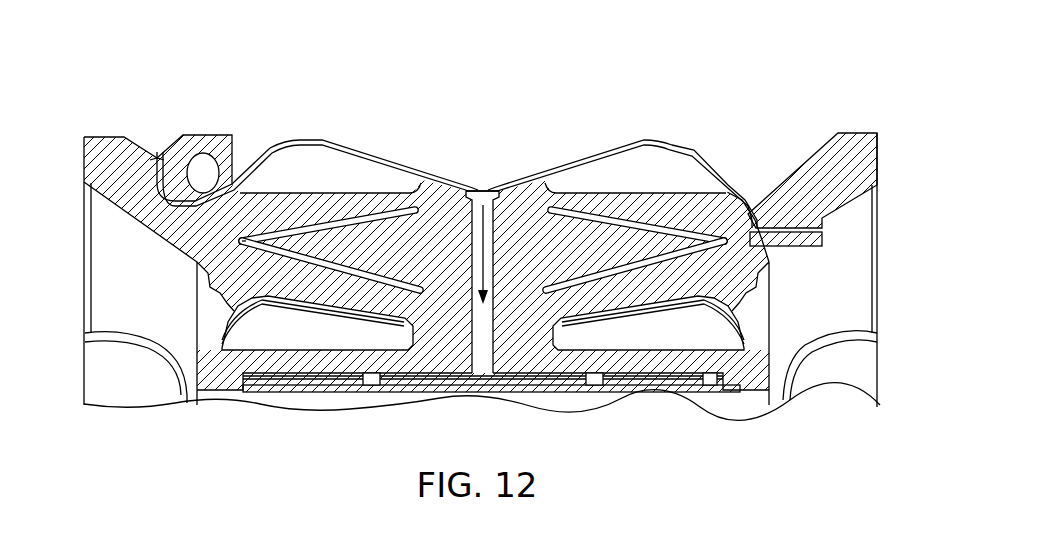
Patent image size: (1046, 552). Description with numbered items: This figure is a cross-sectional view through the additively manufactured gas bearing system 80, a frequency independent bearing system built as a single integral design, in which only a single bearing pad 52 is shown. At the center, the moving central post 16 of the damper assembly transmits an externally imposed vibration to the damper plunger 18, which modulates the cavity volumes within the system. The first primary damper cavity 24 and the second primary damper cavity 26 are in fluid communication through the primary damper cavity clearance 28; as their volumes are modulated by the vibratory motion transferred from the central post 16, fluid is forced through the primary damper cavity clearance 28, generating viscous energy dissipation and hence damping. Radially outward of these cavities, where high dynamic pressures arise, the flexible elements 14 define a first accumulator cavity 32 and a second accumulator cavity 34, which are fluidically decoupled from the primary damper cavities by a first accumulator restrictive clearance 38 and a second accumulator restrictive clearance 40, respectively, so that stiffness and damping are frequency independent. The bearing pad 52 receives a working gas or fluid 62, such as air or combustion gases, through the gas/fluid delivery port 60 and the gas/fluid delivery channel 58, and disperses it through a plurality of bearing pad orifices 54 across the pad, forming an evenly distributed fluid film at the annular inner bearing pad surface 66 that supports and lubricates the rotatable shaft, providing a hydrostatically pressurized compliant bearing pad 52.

The bearing system 80 is at (776, 56).
The gas/fluid delivery port 60 is at (147, 145).
The working gas or fluid 62 is at (159, 125).
The first accumulator cavity 32 is at (327, 177).
The central post 16 is at (474, 193).
The gas/fluid delivery channel 58 is at (548, 196).
The first primary damper cavity 24 is at (291, 222).
The second primary damper cavity 26 is at (383, 245).
The first accumulator restrictive clearance 38 is at (542, 165).
The flexible elements 14 is at (623, 318).
The damper plunger 18 is at (380, 232).
The second accumulator restrictive clearance 40 is at (555, 290).
The second accumulator cavity 34 is at (294, 338).
The bearing pad orifices 54 is at (452, 393).
The primary damper cavity clearance 28 is at (745, 192).
The bearing pad surface 66 is at (233, 388).
The bearing pad 52 is at (731, 400).